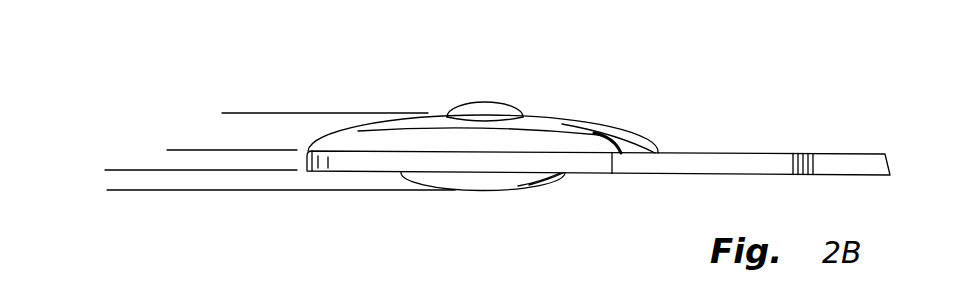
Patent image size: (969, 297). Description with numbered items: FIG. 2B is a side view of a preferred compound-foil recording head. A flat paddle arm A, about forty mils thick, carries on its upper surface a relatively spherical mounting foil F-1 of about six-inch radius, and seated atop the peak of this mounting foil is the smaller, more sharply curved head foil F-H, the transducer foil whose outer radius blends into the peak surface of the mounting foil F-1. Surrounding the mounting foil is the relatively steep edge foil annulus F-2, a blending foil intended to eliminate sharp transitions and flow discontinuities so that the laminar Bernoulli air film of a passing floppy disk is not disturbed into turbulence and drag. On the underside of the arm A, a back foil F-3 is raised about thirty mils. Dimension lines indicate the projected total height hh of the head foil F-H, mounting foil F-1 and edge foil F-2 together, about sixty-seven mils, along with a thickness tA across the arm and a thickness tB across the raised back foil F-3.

The paddle arm A is at (809, 155).
The mounting foil F-1 is at (568, 121).
The edge foil annulus F-2 is at (639, 140).
The head foil F-H is at (485, 102).
The back foil F-3 is at (545, 185).
The projected total height hh is at (233, 197).
The plate thickness dimension tA is at (175, 218).
The lower dome thickness dimension tB is at (116, 218).